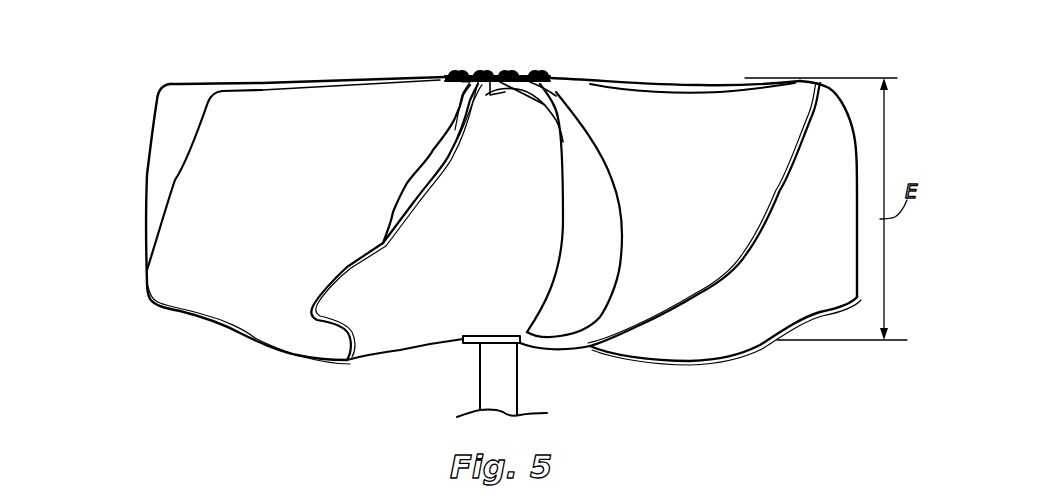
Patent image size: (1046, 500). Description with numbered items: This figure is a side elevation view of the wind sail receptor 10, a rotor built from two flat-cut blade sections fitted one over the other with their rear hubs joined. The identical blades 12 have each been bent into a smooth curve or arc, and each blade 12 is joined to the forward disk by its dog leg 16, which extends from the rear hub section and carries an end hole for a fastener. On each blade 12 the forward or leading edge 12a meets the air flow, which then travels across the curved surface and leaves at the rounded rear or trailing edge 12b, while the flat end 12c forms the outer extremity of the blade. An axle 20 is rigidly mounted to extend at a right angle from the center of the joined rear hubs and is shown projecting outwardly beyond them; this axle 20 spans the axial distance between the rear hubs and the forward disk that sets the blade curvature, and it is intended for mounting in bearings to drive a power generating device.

The wind sail receptor 10 is at (445, 80).
The blade 12 is at (189, 142).
The forward or leading edge 12a is at (317, 87).
The rear or trailing edge 12b is at (268, 348).
The flat end 12c is at (167, 196).
The dog leg 16 is at (570, 83).
The axle 20 is at (493, 380).